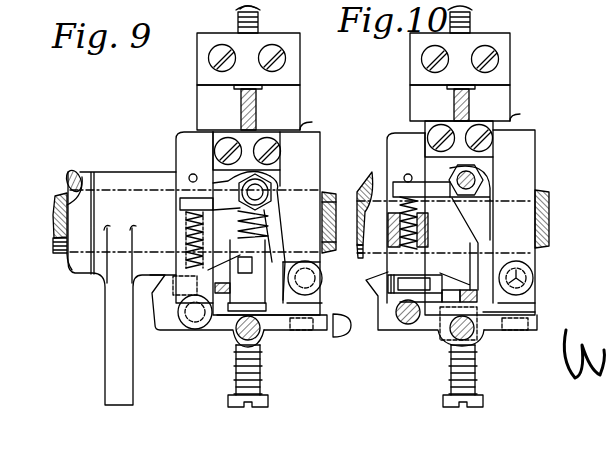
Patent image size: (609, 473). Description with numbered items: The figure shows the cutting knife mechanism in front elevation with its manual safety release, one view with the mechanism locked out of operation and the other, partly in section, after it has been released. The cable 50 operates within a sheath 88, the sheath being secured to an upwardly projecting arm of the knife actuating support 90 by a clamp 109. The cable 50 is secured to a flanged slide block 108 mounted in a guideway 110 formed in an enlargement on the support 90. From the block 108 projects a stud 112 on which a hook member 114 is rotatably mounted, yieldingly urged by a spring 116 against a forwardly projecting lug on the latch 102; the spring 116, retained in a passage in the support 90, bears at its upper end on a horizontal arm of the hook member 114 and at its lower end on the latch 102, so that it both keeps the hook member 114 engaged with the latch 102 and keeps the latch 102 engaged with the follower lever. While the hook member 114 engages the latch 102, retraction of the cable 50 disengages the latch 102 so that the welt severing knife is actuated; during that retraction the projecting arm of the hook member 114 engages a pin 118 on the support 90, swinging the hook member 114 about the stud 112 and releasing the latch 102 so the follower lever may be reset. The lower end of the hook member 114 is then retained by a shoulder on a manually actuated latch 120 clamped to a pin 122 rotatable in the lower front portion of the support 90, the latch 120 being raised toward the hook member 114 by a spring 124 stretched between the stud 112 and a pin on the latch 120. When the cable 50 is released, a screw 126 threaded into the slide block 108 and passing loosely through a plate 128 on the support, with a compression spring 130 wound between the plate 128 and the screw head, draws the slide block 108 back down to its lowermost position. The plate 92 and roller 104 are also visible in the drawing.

In FIG. 9, the cable 50 is at (257, 112).
In FIG. 10, the cable 50 is at (469, 110).
In FIG. 9, the sheath 88 is at (238, 24).
In FIG. 10, the sheath 88 is at (474, 26).
In FIG. 9, the knife actuating support 90 is at (104, 294).
In FIG. 10, the knife actuating support 90 is at (376, 137).
In FIG. 9, the plate 92 is at (335, 190).
In FIG. 10, the plate 92 is at (547, 194).
In FIG. 9, the latch 102 is at (320, 266).
In FIG. 10, the latch 102 is at (522, 250).
In FIG. 9, the roller 104 is at (322, 281).
In FIG. 10, the roller 104 is at (534, 274).
In FIG. 9, the slide block 108 is at (300, 127).
In FIG. 10, the slide block 108 is at (512, 124).
In FIG. 9, the clamp 109 is at (302, 53).
In FIG. 10, the clamp 109 is at (512, 53).
In FIG. 9, the guideway 110 is at (200, 132).
In FIG. 10, the guideway 110 is at (496, 145).
In FIG. 9, the stud 112 is at (281, 164).
In FIG. 10, the stud 112 is at (494, 142).
In FIG. 9, the hook member 114 is at (274, 190).
In FIG. 10, the hook member 114 is at (491, 165).
In FIG. 9, the spring 116 is at (183, 226).
In FIG. 10, the spring 116 is at (424, 214).
In FIG. 9, the pin 118 is at (190, 175).
In FIG. 10, the pin 118 is at (415, 165).
In FIG. 9, the manually actuated latch 120 is at (324, 339).
In FIG. 10, the manually actuated latch 120 is at (514, 338).
In FIG. 9, the pin 122 is at (190, 333).
In FIG. 10, the pin 122 is at (404, 326).
In FIG. 9, the spring 124 is at (269, 216).
In FIG. 9, the screw 126 is at (268, 402).
In FIG. 10, the screw 126 is at (443, 401).
In FIG. 9, the plate 128 is at (321, 309).
In FIG. 10, the plate 128 is at (536, 311).
In FIG. 9, the compression spring 130 is at (262, 371).
In FIG. 10, the compression spring 130 is at (449, 368).